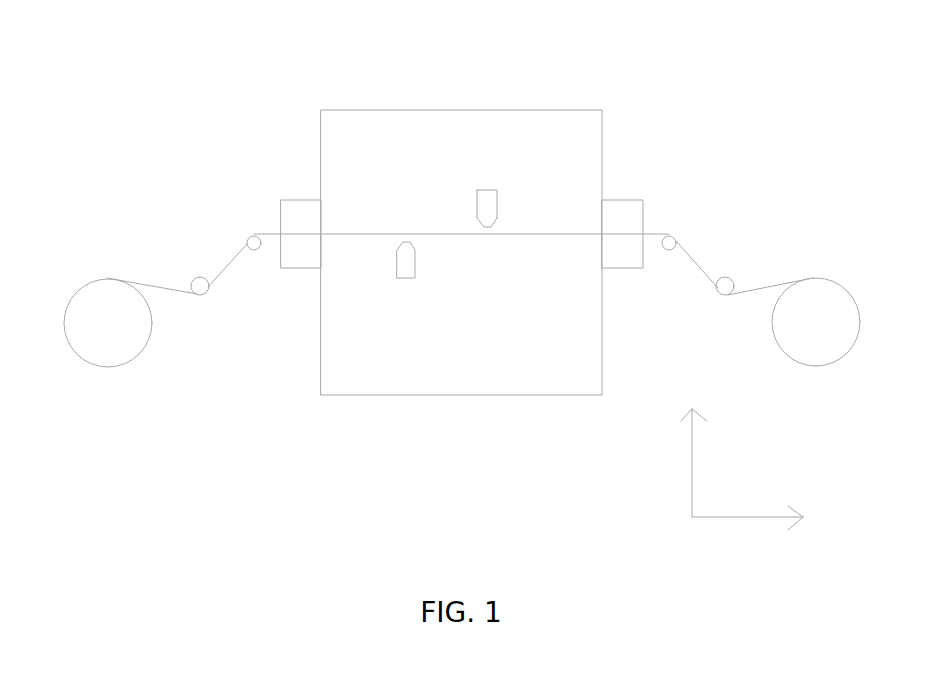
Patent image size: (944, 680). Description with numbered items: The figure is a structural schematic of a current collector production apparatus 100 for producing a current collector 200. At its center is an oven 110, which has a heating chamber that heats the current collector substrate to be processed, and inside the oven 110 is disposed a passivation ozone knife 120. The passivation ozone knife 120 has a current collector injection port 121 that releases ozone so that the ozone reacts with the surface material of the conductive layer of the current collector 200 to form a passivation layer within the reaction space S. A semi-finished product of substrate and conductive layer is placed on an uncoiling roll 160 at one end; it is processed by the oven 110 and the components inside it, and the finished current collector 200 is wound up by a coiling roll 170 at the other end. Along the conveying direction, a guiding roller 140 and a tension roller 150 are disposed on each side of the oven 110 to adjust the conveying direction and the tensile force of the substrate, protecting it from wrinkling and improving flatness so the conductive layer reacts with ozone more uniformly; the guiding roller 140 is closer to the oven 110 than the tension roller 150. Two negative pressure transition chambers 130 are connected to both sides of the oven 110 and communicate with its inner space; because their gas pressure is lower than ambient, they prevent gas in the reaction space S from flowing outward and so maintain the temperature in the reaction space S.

The current collector production apparatus 100 is at (247, 70).
The oven 110 is at (598, 94).
The passivation ozone knife 120 is at (508, 208).
The current collector injection port 121 is at (489, 228).
The negative pressure transition chamber 130 is at (299, 269).
The guiding roller 140 is at (251, 235).
The tension roller 150 is at (197, 278).
The uncoiling roll 160 is at (95, 303).
The coiling roll 170 is at (831, 297).
The current collector 200 is at (768, 287).
The reaction space S is at (426, 345).